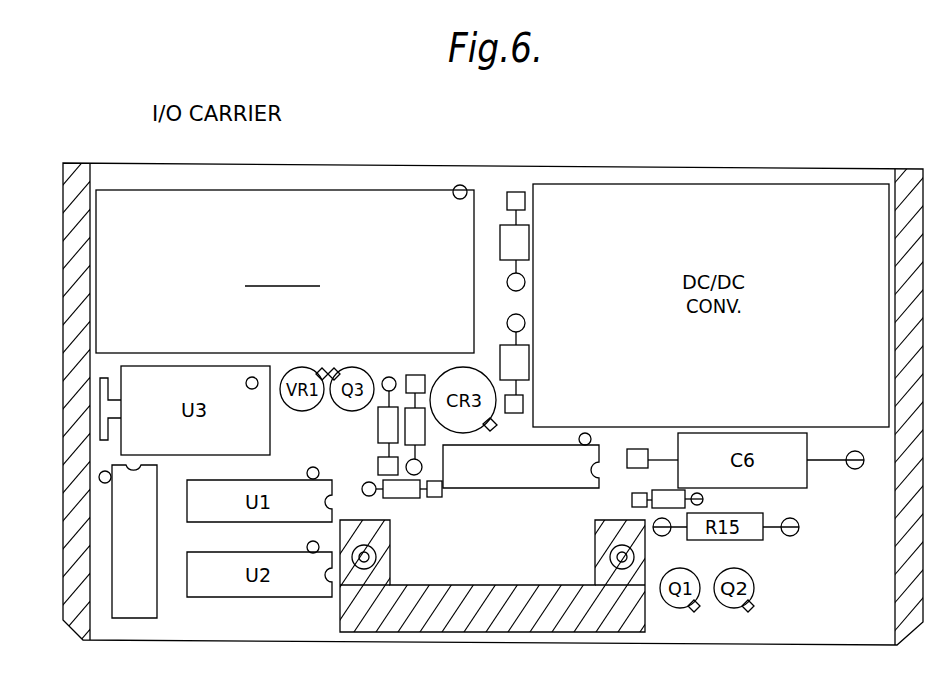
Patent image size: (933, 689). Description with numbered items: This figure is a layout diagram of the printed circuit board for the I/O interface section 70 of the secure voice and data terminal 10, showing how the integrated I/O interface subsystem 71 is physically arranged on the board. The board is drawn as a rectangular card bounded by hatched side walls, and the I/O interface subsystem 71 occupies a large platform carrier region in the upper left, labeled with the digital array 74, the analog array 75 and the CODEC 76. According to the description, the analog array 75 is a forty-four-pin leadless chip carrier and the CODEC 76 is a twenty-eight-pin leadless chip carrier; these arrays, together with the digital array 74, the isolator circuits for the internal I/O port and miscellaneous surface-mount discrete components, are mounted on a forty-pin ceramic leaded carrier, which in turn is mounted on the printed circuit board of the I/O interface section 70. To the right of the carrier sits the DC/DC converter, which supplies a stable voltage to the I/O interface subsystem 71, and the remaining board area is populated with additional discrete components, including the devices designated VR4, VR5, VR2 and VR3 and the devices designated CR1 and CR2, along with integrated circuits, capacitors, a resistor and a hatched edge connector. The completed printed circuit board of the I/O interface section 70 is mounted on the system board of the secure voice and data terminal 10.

The I/O interface section 70 is at (598, 163).
The I/O interface subsystem 71 is at (248, 186).
The digital array 74 is at (285, 269).
The analog array 75 is at (285, 269).
The CODEC 76 is at (285, 269).
The secure voice and data terminal (SVDT) 10 is at (510, 540).
The voltage regulator VR4 is at (509, 237).
The voltage regulator VR5 is at (509, 362).
The voltage regulator VR2 is at (387, 418).
The voltage regulator VR3 is at (407, 428).
The diode CR1 is at (655, 503).
The diode CR2 is at (400, 490).